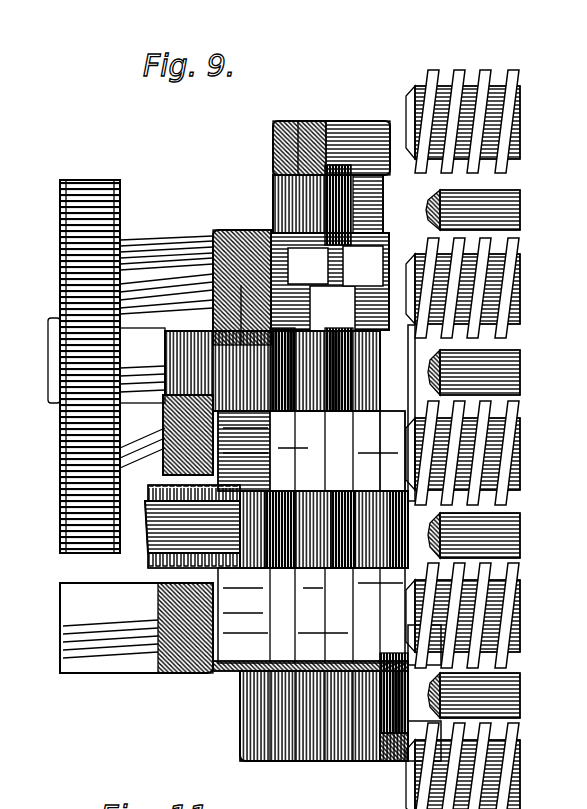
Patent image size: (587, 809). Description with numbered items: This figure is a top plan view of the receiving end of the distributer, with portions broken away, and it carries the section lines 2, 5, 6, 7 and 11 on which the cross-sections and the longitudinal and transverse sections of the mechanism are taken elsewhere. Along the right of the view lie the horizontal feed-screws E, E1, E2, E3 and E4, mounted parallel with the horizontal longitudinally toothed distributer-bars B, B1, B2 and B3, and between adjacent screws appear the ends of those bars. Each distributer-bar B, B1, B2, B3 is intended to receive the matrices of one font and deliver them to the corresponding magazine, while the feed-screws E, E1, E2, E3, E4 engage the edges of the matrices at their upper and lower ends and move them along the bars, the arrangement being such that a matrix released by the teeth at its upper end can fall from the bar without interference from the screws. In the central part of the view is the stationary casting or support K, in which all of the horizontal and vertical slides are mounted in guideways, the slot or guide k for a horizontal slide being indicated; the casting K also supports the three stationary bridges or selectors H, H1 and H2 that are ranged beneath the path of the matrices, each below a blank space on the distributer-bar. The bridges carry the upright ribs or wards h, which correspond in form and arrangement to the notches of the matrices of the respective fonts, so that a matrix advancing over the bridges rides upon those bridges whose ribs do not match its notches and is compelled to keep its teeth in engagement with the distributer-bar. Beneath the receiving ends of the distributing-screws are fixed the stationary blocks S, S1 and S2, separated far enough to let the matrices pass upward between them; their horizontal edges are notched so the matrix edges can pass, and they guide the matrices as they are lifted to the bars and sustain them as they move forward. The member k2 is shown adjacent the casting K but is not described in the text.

The stationary casting or support K is at (306, 177).
The clutch spring k2 is at (322, 184).
The slot or guide for horizontal slide k is at (262, 365).
The stationary block S is at (360, 230).
The stationary block S1 is at (385, 451).
The stationary block S2 is at (311, 615).
The stationary bridge or selector H is at (311, 451).
The stationary bridge or selector H1 is at (313, 512).
The stationary bridge or selector H2 is at (373, 512).
The upright rib or ward h is at (324, 551).
The section line 6— 6 is at (138, 520).
The section line 7— 7 is at (232, 683).
The section line 11— 11 is at (335, 560).
The section line 5— 5 is at (412, 808).
The section line 2— 2 is at (472, 808).
The horizontal feed-screw E is at (512, 82).
The horizontal feed-screw E1 is at (512, 262).
The horizontal feed-screw E2 is at (512, 430).
The horizontal feed-screw E3 is at (512, 592).
The horizontal feed-screw E4 is at (512, 754).
The distributer-bar B is at (512, 194).
The distributer-bar B1 is at (512, 360).
The distributer-bar B2 is at (512, 515).
The distributer-bar B3 is at (512, 678).